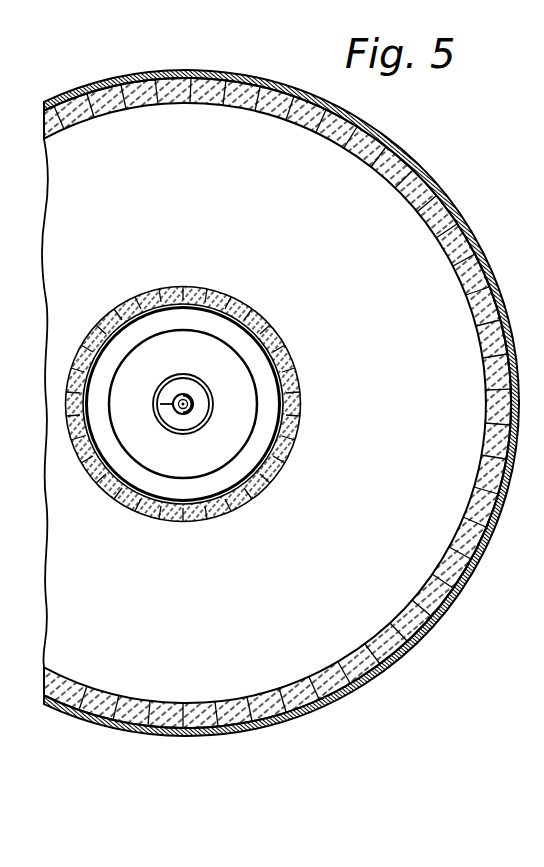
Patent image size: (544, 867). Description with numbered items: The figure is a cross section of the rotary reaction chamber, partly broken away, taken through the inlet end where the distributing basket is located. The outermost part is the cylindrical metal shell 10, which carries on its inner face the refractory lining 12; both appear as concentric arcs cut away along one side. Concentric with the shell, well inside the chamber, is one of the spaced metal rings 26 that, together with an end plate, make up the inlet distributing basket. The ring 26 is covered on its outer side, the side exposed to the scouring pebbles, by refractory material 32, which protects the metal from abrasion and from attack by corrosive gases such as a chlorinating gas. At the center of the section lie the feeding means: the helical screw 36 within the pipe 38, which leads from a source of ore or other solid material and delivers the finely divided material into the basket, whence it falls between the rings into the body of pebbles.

The cylindrical metal shell 10 is at (255, 725).
The refractory lining 12 is at (283, 712).
The spaced metal rings 26 is at (300, 413).
The refractory material 32 is at (296, 442).
The helical screw 36 is at (190, 417).
The pipe 38 is at (197, 378).